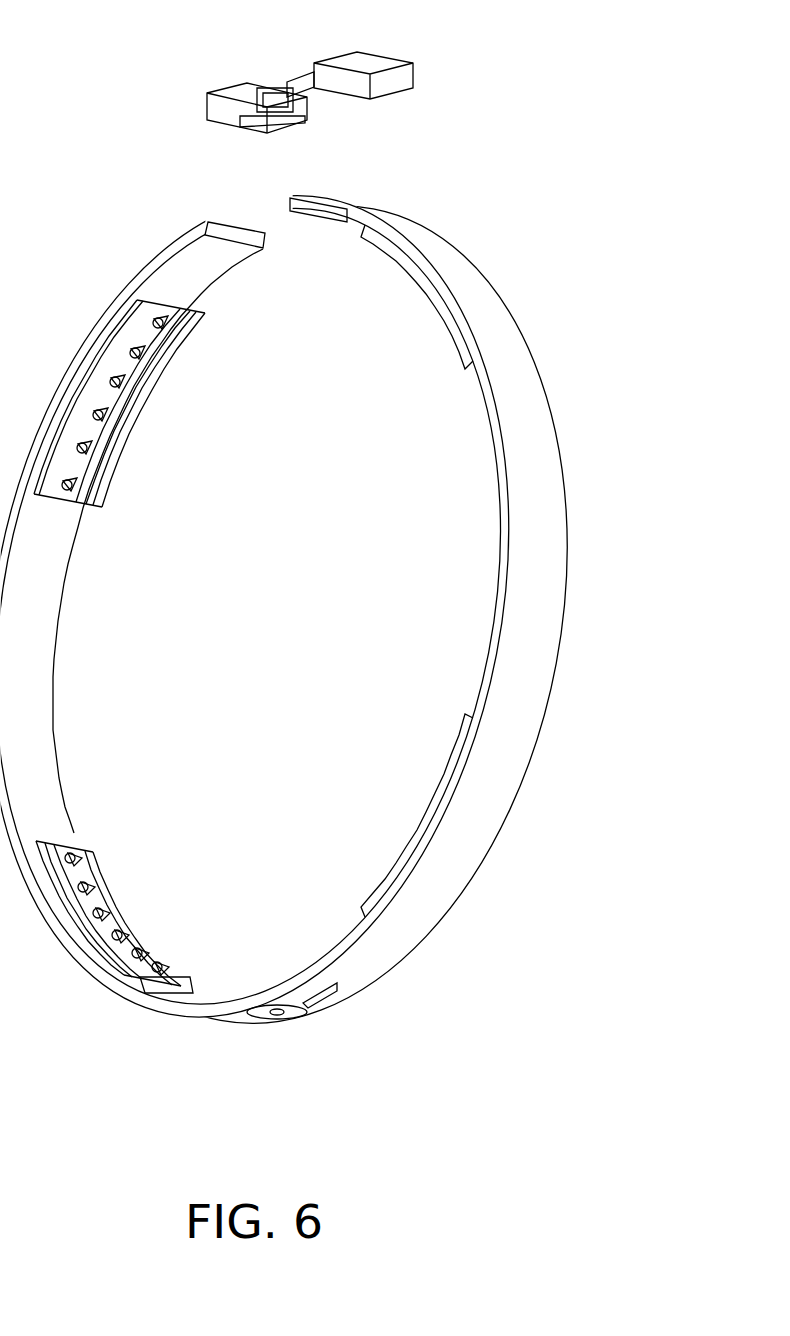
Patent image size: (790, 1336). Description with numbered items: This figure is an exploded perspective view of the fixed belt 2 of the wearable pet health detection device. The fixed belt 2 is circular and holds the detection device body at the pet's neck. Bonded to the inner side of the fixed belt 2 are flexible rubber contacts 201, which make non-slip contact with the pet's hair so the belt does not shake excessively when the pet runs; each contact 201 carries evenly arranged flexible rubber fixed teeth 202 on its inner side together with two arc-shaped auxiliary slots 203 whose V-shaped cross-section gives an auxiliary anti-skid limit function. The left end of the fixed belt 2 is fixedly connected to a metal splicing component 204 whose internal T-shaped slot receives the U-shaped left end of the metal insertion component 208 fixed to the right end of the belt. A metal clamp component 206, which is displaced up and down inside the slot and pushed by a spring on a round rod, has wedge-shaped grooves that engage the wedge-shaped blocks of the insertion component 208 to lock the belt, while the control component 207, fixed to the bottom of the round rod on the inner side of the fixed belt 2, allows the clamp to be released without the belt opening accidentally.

The fixed belt 2 is at (538, 582).
The contact 201 is at (83, 507).
The fixed teeth 202 is at (120, 382).
The auxiliary slot 203 is at (160, 347).
The splicing component 204 is at (218, 102).
The clamp component 206 is at (245, 85).
The control component 207 is at (303, 125).
The insertion component 208 is at (333, 105).